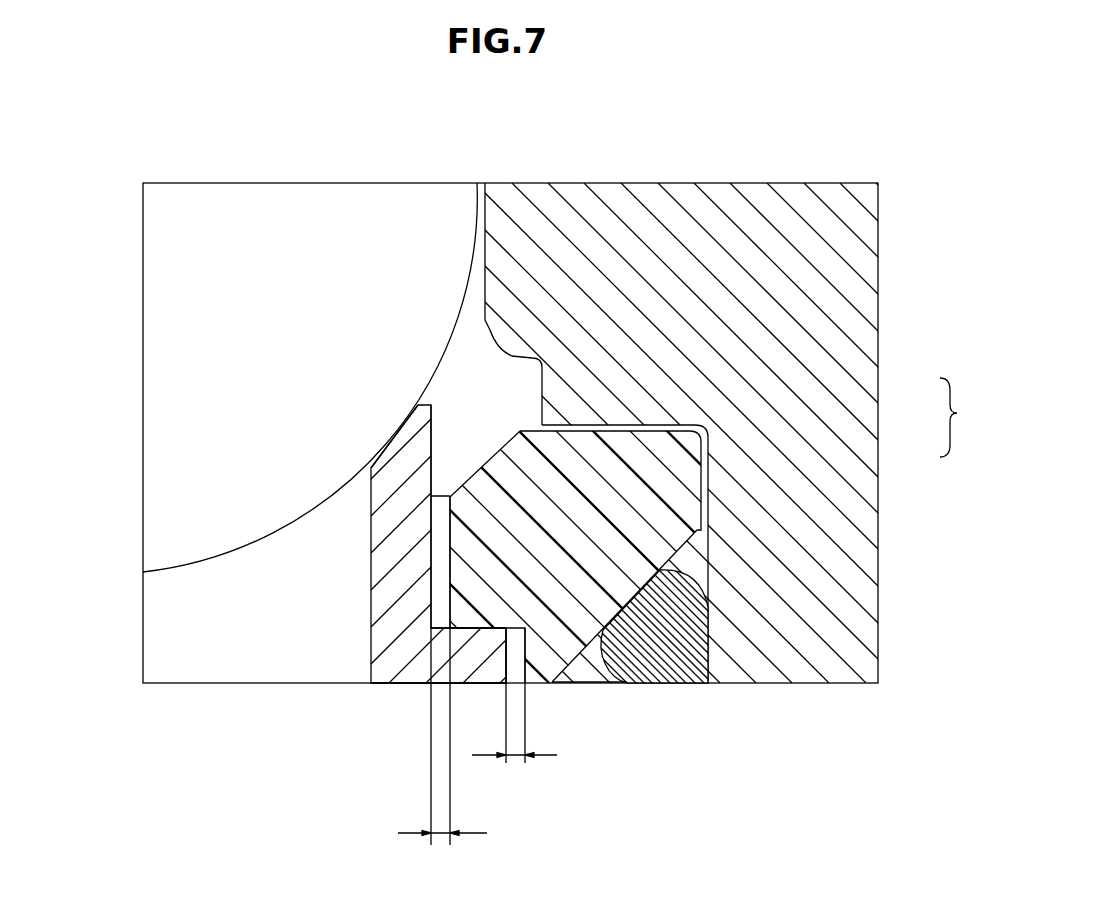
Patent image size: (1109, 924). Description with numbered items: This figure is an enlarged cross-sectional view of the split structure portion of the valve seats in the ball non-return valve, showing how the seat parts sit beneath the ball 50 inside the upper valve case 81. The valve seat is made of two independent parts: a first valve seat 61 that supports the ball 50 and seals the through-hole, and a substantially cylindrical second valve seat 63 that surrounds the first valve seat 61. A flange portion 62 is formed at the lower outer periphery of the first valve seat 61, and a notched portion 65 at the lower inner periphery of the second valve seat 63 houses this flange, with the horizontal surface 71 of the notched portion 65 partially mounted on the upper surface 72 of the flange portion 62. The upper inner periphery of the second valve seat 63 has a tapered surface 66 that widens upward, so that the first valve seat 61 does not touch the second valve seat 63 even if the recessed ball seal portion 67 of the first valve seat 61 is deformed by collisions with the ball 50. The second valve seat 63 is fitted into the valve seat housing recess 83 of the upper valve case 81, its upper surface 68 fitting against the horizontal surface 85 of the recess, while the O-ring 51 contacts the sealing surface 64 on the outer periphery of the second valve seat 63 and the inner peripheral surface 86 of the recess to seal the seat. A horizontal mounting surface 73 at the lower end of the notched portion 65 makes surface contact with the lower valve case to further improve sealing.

The ball 50 is at (208, 303).
The O-ring 51 is at (660, 630).
The first valve seat 61 is at (395, 500).
The flange portion 62 is at (505, 662).
The second valve seat 63 is at (708, 532).
The sealing surface 64 is at (690, 563).
The notched portion 65 is at (560, 663).
The tapered surface 66 is at (513, 627).
The ball seal portion 67 is at (403, 447).
The upper surface 68 is at (607, 427).
The horizontal surface 71 is at (507, 490).
The upper surface 72 is at (440, 617).
The horizontal mounting surface 73 is at (545, 688).
The upper valve case 81 is at (753, 347).
The valve seat housing recess 83 is at (963, 417).
The horizontal surface 85 is at (630, 420).
The inner peripheral surface 86 is at (710, 483).